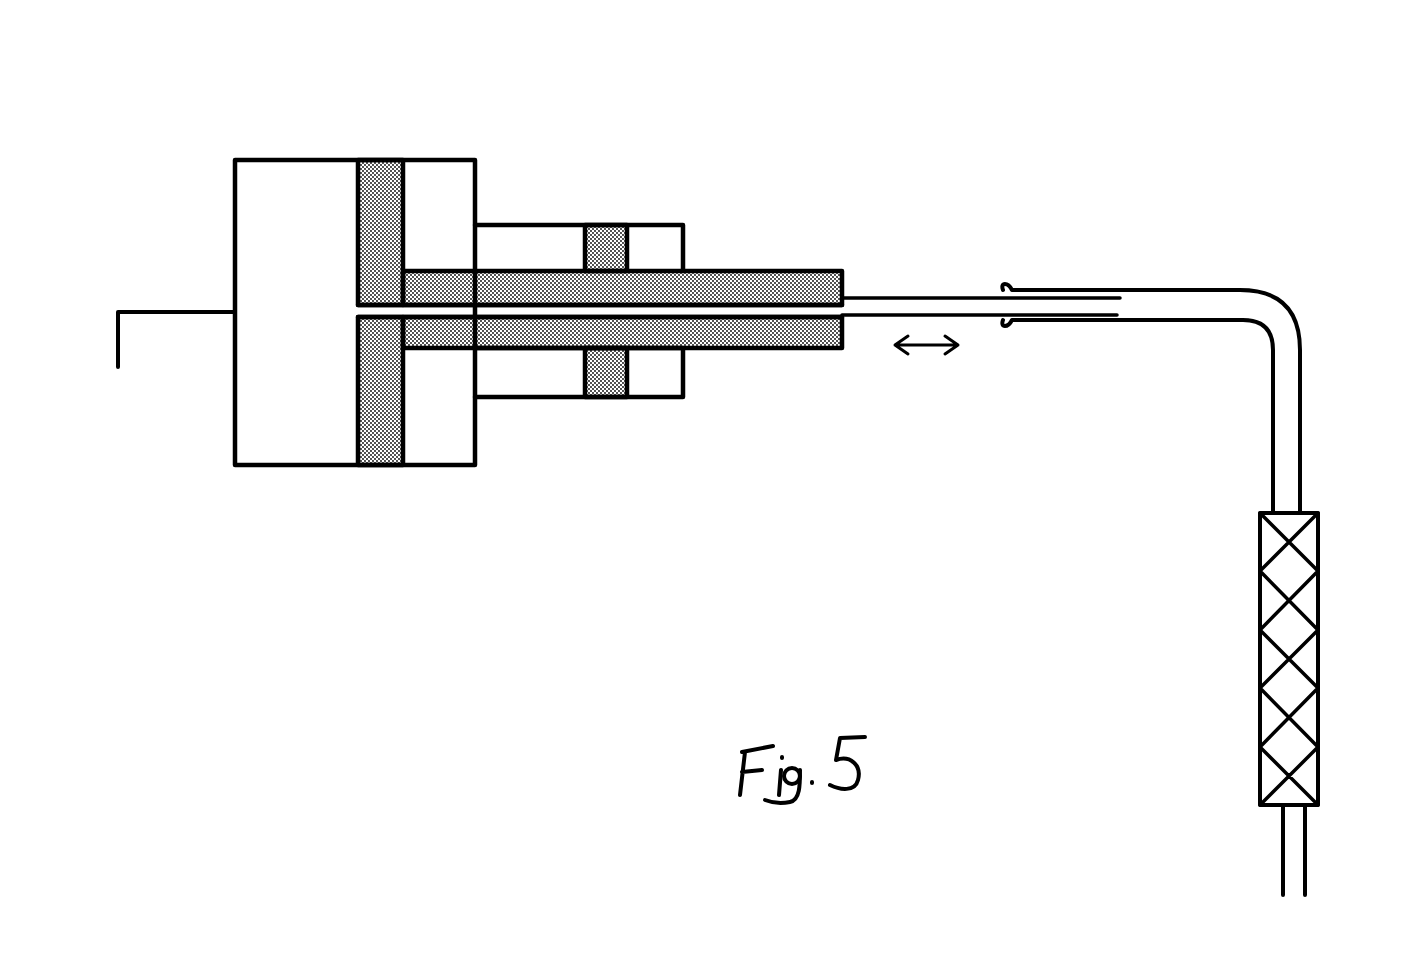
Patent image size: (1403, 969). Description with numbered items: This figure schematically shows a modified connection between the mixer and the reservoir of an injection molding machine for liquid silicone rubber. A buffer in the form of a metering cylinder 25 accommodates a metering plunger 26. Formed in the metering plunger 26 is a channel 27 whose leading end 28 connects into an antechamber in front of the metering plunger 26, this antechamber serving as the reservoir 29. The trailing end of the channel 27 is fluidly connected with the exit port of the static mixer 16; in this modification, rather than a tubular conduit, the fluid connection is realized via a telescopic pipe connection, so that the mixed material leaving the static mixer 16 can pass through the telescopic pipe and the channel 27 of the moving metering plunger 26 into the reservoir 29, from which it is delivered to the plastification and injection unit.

The static mixer 16 is at (1322, 547).
The metering cylinder 25 is at (590, 177).
The metering plunger 26 is at (742, 272).
The channel 27 is at (542, 306).
The leading end 28 is at (353, 306).
The reservoir 29 is at (270, 285).